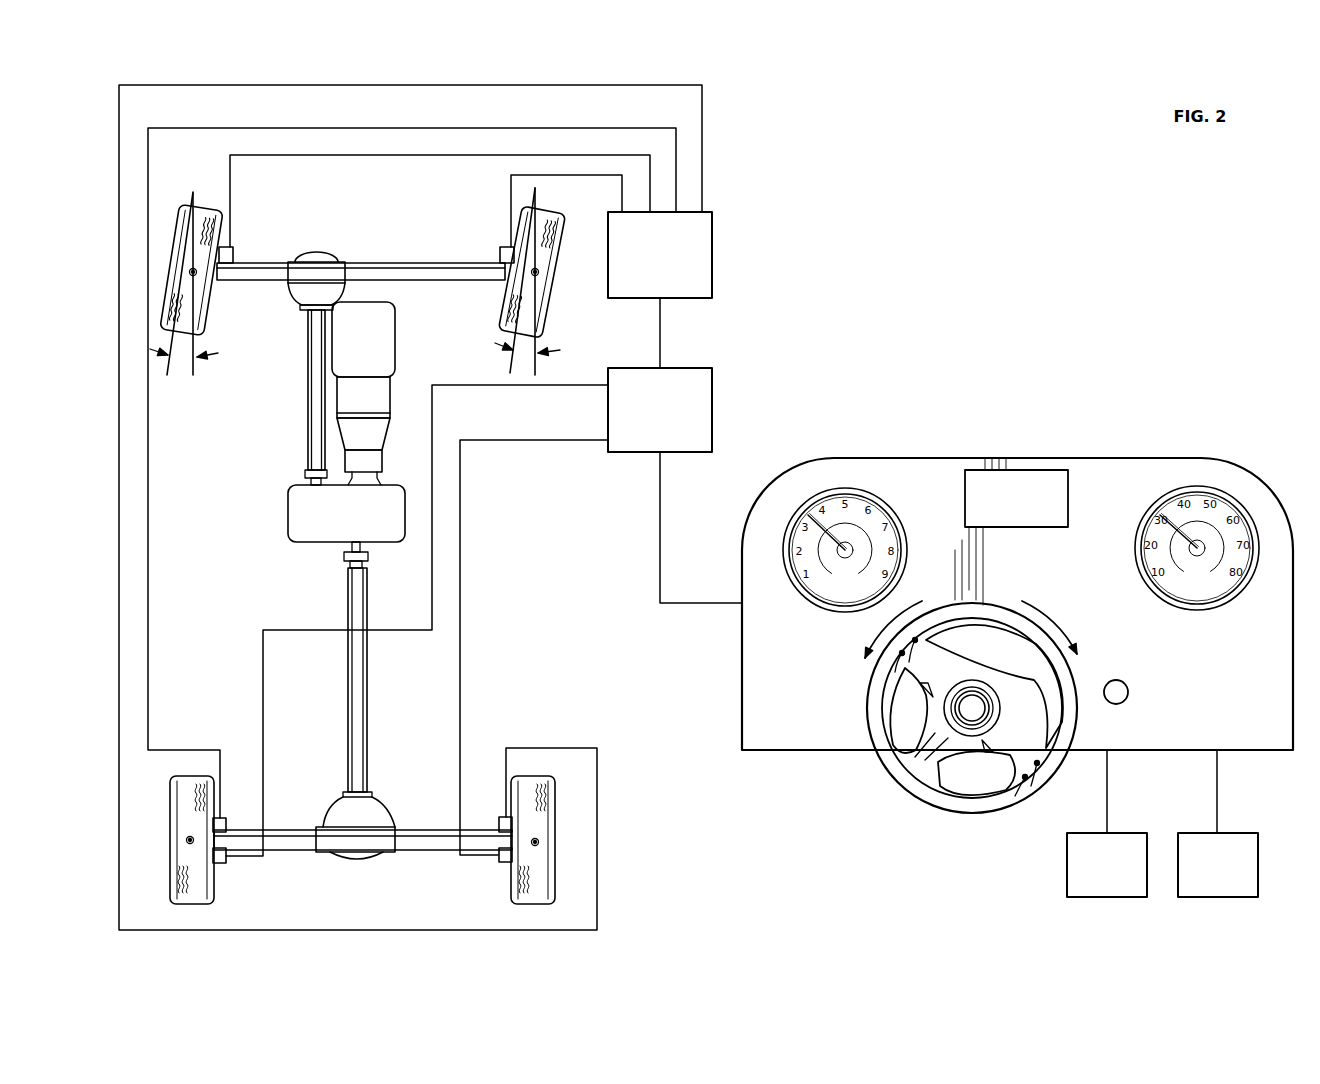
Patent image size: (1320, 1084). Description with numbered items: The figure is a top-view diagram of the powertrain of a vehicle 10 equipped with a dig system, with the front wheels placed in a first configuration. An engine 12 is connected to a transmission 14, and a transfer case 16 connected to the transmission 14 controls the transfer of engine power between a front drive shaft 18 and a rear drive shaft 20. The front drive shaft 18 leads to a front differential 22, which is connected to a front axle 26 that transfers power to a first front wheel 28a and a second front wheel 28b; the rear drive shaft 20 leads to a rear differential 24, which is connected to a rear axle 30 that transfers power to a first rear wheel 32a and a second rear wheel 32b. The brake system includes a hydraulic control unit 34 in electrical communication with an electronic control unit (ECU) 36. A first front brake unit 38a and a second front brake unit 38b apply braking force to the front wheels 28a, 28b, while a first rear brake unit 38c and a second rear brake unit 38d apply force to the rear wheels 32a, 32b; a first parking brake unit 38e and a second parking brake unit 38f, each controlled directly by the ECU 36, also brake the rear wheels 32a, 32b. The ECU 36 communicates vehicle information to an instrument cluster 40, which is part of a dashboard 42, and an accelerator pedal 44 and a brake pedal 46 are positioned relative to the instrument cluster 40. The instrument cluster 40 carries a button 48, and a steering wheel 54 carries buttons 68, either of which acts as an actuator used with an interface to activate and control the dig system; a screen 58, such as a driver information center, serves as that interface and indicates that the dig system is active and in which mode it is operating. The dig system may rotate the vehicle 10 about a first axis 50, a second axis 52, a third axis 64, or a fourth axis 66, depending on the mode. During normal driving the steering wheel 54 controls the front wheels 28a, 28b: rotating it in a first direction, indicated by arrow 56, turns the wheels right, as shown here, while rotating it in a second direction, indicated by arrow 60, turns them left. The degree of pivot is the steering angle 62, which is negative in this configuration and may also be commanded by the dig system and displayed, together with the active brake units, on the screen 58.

The vehicle 10 is at (588, 678).
The engine 12 is at (369, 313).
The transmission 14 is at (353, 407).
The transfer case 16 is at (332, 525).
The front drive shaft 18 is at (307, 415).
The rear drive shaft 20 is at (358, 680).
The front differential 22 is at (317, 257).
The rear differential 24 is at (357, 862).
The front axle 26 is at (258, 276).
The first front wheel 28a is at (187, 246).
The second front wheel 28b is at (514, 274).
The rear axle 30 is at (290, 852).
The first rear wheel 32a is at (195, 850).
The second rear wheel 32b is at (532, 850).
The hydraulic control unit 34 is at (650, 265).
The electronic control unit (ECU) 36 is at (650, 435).
The first front brake unit 38a is at (234, 256).
The second front brake unit 38b is at (500, 255).
The first rear brake unit 38c is at (227, 825).
The second rear brake unit 38d is at (498, 822).
The first parking brake unit 38e is at (222, 865).
The second parking brake unit 38f is at (503, 863).
The instrument cluster 40 is at (765, 565).
The dashboard 42 is at (973, 458).
The accelerator pedal 44 is at (1208, 875).
The brake pedal 46 is at (1097, 875).
The button 48 is at (1117, 680).
The first axis 50 is at (186, 840).
The second axis 52 is at (539, 842).
The steering wheel 54 is at (920, 800).
The arrow 56 is at (1055, 620).
The screen 58 is at (1015, 468).
The arrow 60 is at (882, 632).
The steering angle 62 is at (212, 364).
The third axis 64 is at (188, 272).
The fourth axis 66 is at (540, 273).
The buttons 68 is at (913, 643).